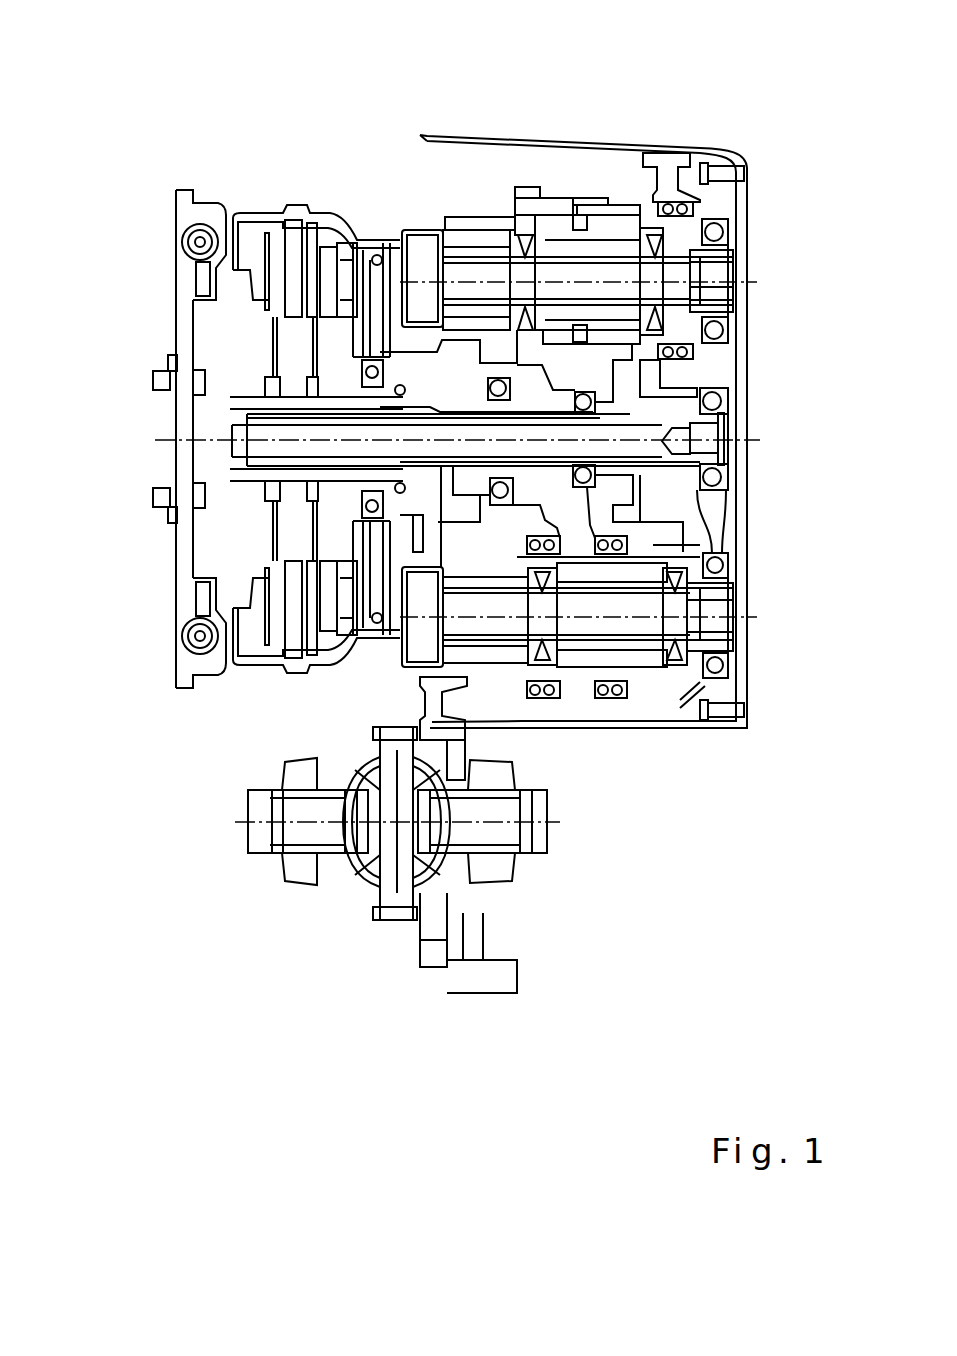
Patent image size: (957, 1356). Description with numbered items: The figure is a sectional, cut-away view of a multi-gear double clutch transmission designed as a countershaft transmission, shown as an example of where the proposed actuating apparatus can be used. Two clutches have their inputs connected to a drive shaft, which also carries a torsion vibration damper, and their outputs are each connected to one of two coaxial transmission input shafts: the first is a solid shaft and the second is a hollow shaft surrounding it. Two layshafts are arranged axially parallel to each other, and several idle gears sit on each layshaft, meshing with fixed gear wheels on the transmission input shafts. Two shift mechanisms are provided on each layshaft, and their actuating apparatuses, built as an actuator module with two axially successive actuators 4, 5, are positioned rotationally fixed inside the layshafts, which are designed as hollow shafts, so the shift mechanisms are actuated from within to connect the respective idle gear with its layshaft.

The actuator 4 is at (483, 273).
The actuator 5 is at (598, 270).